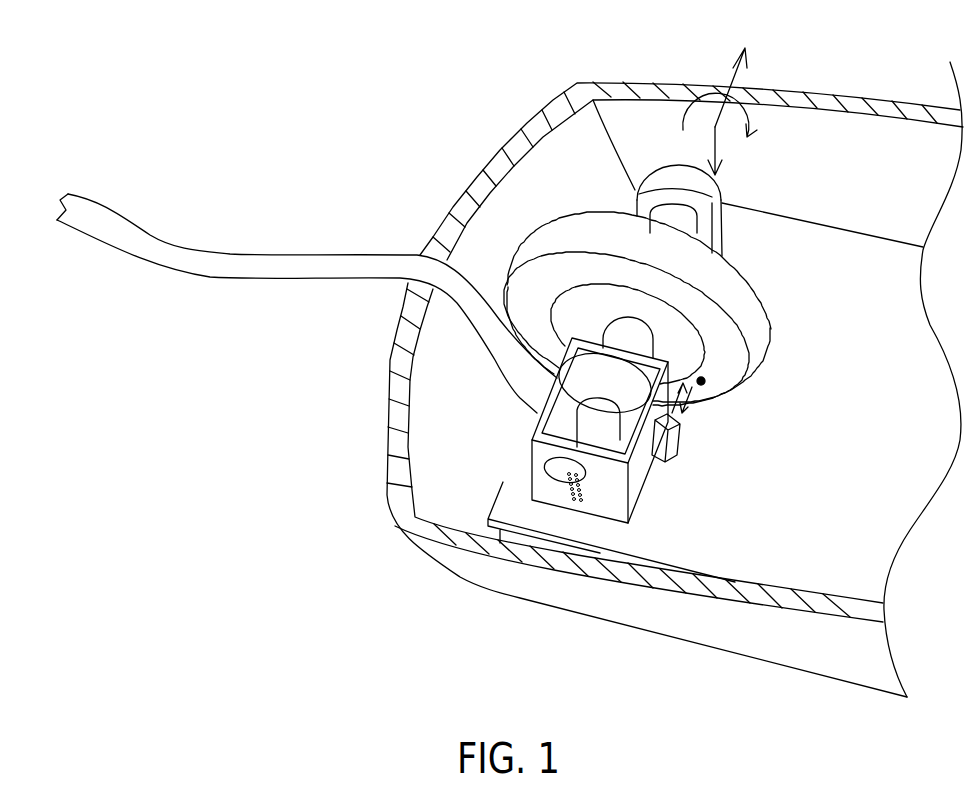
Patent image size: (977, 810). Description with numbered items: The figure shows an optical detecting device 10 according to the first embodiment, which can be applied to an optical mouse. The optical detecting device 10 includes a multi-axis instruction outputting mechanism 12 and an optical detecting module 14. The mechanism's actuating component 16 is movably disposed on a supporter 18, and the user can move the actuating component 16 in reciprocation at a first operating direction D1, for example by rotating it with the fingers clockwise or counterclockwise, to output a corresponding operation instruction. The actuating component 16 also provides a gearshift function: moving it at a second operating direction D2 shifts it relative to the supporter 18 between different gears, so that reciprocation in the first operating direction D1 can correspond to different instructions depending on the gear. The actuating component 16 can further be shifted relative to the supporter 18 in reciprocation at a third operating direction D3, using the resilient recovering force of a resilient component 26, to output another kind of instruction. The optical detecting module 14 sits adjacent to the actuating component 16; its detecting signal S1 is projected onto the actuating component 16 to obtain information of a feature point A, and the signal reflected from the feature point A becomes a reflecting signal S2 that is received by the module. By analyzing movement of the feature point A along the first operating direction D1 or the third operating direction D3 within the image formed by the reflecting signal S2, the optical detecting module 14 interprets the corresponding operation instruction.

The optical detecting device 10 is at (273, 97).
The multi-axis instruction outputting mechanism 12 is at (258, 333).
The optical detecting module 14 is at (662, 460).
The actuating component 16 is at (530, 305).
The supporter 18 is at (514, 399).
The resilient component 26 is at (573, 480).
The feature point A is at (705, 381).
The first operating direction D1 is at (738, 123).
The second operating direction D2 is at (721, 87).
The third operating direction D3 is at (733, 161).
The detecting signal S1 is at (680, 417).
The reflecting signal S2 is at (682, 396).